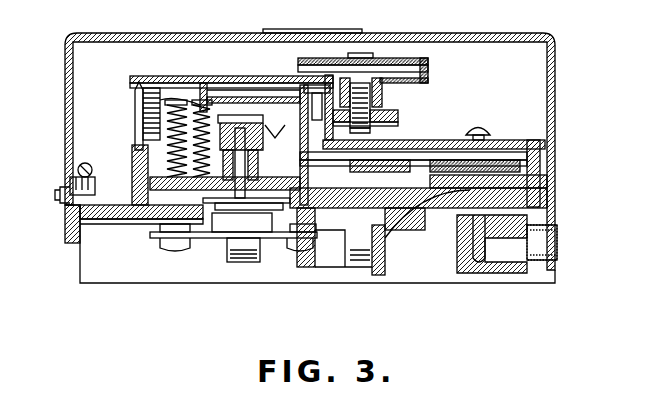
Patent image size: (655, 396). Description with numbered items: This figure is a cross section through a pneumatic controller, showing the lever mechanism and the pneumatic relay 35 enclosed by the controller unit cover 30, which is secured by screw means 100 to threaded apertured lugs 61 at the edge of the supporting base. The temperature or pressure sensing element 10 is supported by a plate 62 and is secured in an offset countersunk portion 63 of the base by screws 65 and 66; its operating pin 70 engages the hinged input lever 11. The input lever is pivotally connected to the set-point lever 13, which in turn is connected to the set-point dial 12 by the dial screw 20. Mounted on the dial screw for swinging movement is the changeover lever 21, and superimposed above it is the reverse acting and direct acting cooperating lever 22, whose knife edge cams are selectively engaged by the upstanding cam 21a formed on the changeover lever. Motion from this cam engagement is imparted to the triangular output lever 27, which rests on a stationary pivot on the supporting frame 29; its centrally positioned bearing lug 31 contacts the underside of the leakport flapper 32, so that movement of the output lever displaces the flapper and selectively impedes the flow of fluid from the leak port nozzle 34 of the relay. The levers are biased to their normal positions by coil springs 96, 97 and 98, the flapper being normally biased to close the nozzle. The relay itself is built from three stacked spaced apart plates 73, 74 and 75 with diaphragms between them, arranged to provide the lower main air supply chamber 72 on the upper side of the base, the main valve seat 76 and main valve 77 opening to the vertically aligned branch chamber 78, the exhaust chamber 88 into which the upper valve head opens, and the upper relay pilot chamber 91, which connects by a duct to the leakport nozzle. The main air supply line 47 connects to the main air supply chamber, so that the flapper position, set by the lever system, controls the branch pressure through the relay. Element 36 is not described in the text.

The temperature or pressure sensing element 10 is at (223, 225).
The input lever 11 is at (258, 130).
The set-point dial 12 is at (403, 57).
The set-point lever 13 is at (272, 125).
The dial screw 20 is at (380, 101).
The changeover lever 21 is at (420, 88).
The upstanding cam 21a is at (395, 115).
The reverse acting and direct acting cooperating lever 22 is at (257, 95).
The triangular output lever 27 is at (232, 84).
The supporting frame 29 is at (140, 145).
The controller unit cover 30 is at (65, 122).
The bearing lug 31 is at (205, 100).
The leakport flapper 32 is at (282, 80).
The leak port nozzle 34 is at (336, 82).
The pneumatic relay 35 is at (512, 143).
The plate 36 is at (425, 157).
The main air supply line 47 is at (575, 257).
The threaded apertured lugs 61 is at (88, 166).
The plate 62 is at (203, 230).
The offset countersunk portion 63 is at (148, 222).
The screw 65 is at (165, 245).
The screw 66 is at (300, 245).
The operating pin 70 is at (243, 190).
The main air supply chamber 72 is at (345, 225).
The plate 73 is at (540, 210).
The plate 74 is at (545, 180).
The plate 75 is at (540, 147).
The main valve seat 76 is at (440, 190).
The main valve 77 is at (462, 205).
The branch chamber 78 is at (405, 200).
The exhaust chamber 88 is at (520, 160).
The relay pilot chamber 91 is at (487, 127).
The coil spring 96 is at (190, 95).
The coil spring 97 is at (140, 105).
The coil spring 98 is at (145, 125).
The screw means 100 is at (60, 193).